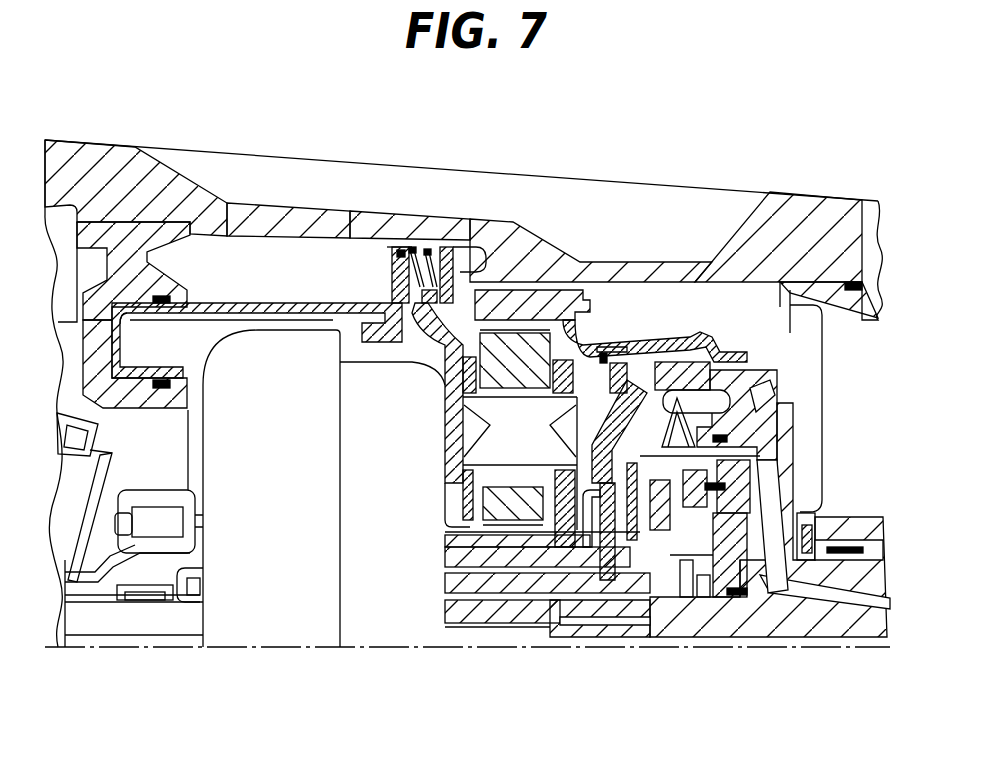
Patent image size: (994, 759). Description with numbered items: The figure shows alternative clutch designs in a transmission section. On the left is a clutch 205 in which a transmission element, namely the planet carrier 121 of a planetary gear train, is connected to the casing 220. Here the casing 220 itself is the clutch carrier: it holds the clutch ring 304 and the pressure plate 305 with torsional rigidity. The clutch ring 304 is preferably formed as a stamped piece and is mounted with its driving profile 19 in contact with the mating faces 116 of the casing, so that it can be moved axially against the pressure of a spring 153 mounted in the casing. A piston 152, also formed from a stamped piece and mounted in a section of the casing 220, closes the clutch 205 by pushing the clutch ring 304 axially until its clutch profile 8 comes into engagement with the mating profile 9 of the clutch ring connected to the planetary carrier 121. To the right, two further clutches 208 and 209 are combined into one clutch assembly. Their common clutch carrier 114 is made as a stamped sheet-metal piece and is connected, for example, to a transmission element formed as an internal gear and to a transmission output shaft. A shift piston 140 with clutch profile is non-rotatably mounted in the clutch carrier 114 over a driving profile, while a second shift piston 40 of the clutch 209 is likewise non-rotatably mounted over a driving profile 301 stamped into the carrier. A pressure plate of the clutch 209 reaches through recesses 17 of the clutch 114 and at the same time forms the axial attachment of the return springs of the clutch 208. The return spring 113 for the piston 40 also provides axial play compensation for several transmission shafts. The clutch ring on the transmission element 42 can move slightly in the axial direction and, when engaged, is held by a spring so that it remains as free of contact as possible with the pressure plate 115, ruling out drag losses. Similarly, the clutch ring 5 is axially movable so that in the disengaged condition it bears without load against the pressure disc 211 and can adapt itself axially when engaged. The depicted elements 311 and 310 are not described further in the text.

The casing 220 is at (120, 153).
The piston 152 is at (250, 303).
The clutch ring 304 is at (368, 285).
The mating faces 116 is at (370, 283).
The driving profile 19 is at (400, 243).
The clutch 205 is at (427, 198).
The spring 153 is at (443, 242).
The pressure plate 305 is at (477, 320).
The pressure plate 115 is at (620, 347).
The retaining plate 311 is at (653, 340).
The clutch carrier 114 is at (690, 333).
The shift piston 140 is at (740, 355).
The clutch 208 is at (803, 387).
The cone spring 310 is at (790, 445).
The driving profile 301 is at (783, 483).
The clutch 209 is at (841, 500).
The clutch profile 8 is at (393, 342).
The mating profile 9 is at (420, 322).
The planet carrier 121 is at (443, 360).
The transmission element 42 is at (462, 480).
The recesses 17 is at (603, 547).
The pressure disc 211 is at (628, 540).
The clutch ring 5 is at (670, 595).
The return spring 113 is at (702, 590).
The shift piston 40 is at (735, 593).